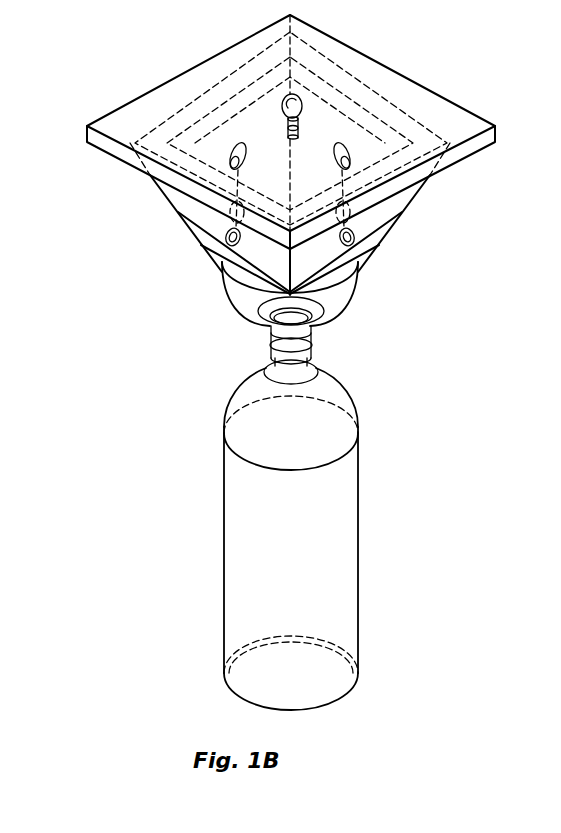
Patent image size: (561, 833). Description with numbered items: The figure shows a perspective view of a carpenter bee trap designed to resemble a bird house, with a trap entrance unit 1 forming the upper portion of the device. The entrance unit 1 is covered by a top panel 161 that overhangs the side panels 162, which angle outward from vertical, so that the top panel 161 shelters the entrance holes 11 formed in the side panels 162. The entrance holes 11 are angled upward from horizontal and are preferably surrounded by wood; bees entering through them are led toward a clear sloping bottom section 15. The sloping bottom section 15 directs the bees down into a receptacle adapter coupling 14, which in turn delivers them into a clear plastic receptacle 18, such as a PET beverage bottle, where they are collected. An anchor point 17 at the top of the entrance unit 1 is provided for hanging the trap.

The trap entrance unit 1 is at (285, 196).
The top panel 161 is at (155, 87).
The side panels 162 is at (403, 214).
The anchor point 17 is at (288, 94).
The entrance holes 11 is at (228, 243).
The sloping bottom section 15 is at (237, 311).
The receptacle adapter coupling 14 is at (268, 347).
The clear plastic receptacle 18 is at (237, 481).